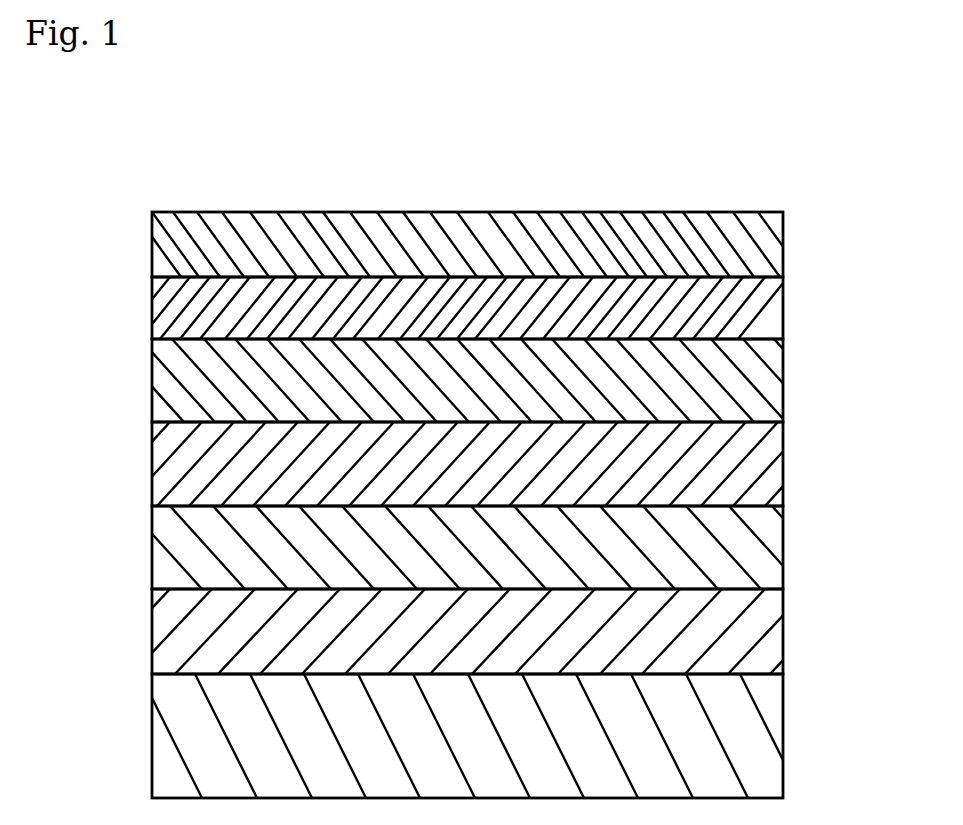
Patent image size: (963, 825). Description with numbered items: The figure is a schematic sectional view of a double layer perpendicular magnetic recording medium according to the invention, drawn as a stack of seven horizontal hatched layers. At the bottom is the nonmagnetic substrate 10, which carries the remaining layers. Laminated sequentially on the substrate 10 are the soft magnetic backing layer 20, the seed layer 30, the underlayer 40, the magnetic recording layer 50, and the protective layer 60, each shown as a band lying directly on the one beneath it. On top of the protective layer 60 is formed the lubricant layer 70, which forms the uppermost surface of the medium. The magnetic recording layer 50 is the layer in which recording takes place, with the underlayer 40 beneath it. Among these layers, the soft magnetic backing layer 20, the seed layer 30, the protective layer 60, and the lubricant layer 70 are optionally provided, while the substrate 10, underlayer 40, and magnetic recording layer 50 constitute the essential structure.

The nonmagnetic substrate 10 is at (762, 740).
The soft magnetic backing layer 20 is at (765, 645).
The seed layer 30 is at (765, 555).
The underlayer 40 is at (765, 465).
The magnetic recording layer 50 is at (765, 385).
The protective layer 60 is at (765, 315).
The lubricant layer 70 is at (765, 247).